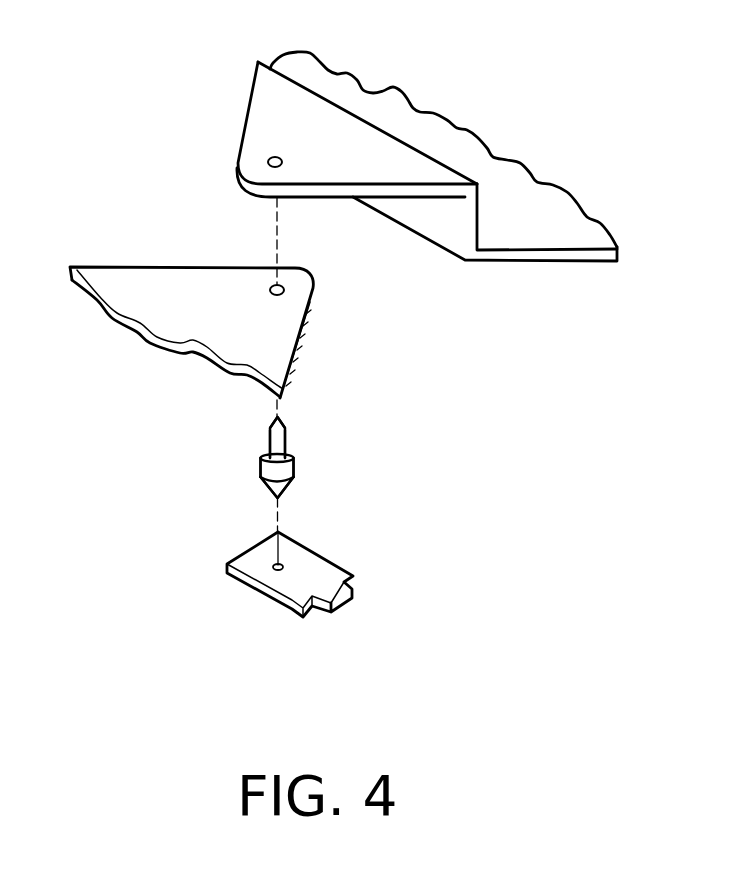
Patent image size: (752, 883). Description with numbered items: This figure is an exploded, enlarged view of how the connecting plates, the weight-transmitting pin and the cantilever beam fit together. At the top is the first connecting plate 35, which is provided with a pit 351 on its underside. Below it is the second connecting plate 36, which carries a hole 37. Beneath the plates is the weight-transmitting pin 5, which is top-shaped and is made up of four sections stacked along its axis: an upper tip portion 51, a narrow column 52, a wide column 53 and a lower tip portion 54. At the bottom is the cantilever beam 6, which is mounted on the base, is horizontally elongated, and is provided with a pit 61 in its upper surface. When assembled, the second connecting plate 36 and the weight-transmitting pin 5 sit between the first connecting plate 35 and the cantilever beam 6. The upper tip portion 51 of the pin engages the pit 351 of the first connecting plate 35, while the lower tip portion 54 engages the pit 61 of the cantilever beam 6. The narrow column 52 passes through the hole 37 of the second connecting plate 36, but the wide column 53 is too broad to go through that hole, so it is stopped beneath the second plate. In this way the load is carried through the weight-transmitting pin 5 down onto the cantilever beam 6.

The first connecting plate 35 is at (322, 118).
The pit 351 is at (270, 198).
The second connecting plate 36 is at (133, 283).
The hole 37 is at (279, 289).
The weight-transmitting pin 5 is at (430, 436).
The upper tip portion 51 is at (285, 420).
The narrow column 52 is at (278, 442).
The wide column 53 is at (287, 469).
The lower tip portion 54 is at (280, 497).
The cantilever beam 6 is at (252, 563).
The pit 61 is at (280, 567).